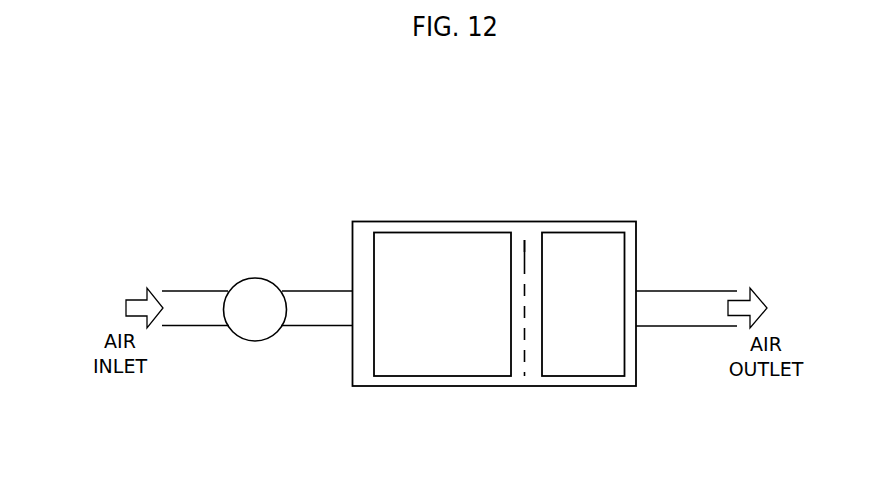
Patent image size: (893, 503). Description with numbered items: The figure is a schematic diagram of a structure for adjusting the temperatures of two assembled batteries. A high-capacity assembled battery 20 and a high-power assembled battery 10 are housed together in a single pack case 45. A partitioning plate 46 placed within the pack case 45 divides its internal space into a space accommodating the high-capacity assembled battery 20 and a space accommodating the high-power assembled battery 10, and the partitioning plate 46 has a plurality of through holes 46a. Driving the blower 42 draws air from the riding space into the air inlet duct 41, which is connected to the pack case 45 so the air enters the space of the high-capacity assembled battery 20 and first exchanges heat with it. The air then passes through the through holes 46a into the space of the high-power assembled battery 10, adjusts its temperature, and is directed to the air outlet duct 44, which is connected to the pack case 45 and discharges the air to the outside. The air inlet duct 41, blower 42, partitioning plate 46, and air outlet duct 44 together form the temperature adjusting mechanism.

The high-power assembled battery 10 is at (581, 353).
The high-capacity assembled battery 20 is at (428, 357).
The air inlet duct 41 is at (190, 326).
The blower 42 is at (255, 295).
The air outlet duct 44 is at (689, 327).
The pack case 45 is at (492, 222).
The partitioning plate 46 is at (525, 358).
The through holes 46a is at (525, 242).